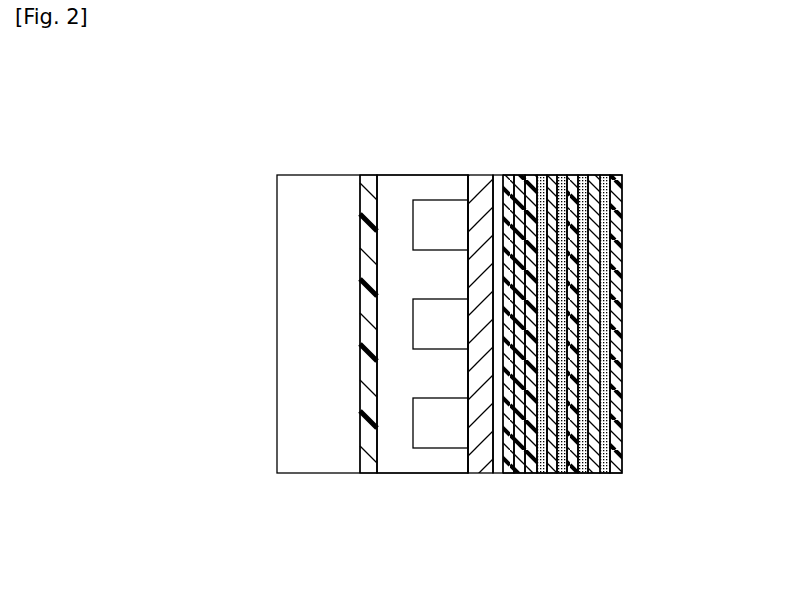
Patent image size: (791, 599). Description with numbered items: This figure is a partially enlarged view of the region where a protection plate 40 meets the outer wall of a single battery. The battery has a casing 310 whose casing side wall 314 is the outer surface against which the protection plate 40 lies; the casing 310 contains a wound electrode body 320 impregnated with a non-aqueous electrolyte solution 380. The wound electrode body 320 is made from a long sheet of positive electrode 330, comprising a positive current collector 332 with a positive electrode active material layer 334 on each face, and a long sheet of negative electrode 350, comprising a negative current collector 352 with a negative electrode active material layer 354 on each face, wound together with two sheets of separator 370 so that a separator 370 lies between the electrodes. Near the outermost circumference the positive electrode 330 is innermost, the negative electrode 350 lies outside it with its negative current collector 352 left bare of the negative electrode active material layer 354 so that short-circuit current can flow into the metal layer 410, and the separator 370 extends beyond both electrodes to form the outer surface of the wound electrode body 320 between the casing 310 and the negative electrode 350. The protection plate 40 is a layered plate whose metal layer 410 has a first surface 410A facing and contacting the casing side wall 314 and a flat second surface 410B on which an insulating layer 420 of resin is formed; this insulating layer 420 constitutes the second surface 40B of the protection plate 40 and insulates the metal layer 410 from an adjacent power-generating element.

The protection plate 40 is at (389, 171).
The second surface 40B is at (355, 211).
The metal layer 410 is at (395, 474).
The first surface of metal layer 410A is at (474, 276).
The second surface of metal layer 410B is at (370, 256).
The insulating layer 420 is at (367, 474).
The casing 310 is at (468, 332).
The casing side wall 314 is at (463, 423).
The wound electrode body 320 is at (499, 362).
The positive electrode 330 is at (560, 477).
The positive current collector 332 is at (562, 175).
The positive electrode active material layer 334 is at (540, 175).
The negative electrode 350 is at (520, 477).
The negative current collector 352 is at (519, 175).
The negative electrode active material layer 354 is at (597, 175).
The separator 370 is at (507, 474).
The non-aqueous electrolyte solution 380 is at (613, 327).